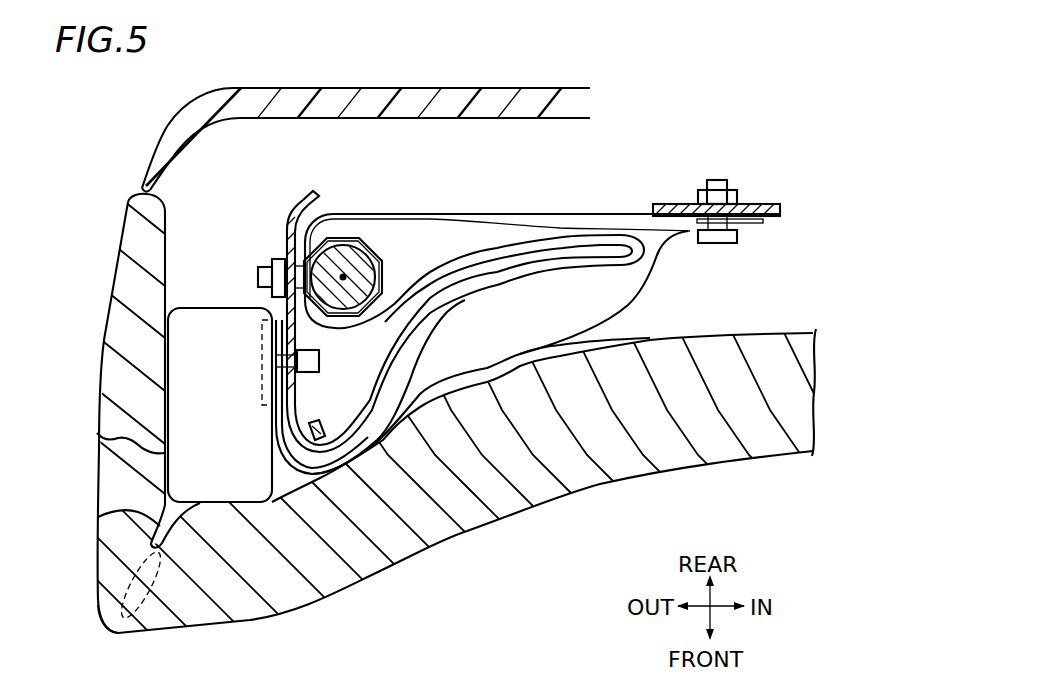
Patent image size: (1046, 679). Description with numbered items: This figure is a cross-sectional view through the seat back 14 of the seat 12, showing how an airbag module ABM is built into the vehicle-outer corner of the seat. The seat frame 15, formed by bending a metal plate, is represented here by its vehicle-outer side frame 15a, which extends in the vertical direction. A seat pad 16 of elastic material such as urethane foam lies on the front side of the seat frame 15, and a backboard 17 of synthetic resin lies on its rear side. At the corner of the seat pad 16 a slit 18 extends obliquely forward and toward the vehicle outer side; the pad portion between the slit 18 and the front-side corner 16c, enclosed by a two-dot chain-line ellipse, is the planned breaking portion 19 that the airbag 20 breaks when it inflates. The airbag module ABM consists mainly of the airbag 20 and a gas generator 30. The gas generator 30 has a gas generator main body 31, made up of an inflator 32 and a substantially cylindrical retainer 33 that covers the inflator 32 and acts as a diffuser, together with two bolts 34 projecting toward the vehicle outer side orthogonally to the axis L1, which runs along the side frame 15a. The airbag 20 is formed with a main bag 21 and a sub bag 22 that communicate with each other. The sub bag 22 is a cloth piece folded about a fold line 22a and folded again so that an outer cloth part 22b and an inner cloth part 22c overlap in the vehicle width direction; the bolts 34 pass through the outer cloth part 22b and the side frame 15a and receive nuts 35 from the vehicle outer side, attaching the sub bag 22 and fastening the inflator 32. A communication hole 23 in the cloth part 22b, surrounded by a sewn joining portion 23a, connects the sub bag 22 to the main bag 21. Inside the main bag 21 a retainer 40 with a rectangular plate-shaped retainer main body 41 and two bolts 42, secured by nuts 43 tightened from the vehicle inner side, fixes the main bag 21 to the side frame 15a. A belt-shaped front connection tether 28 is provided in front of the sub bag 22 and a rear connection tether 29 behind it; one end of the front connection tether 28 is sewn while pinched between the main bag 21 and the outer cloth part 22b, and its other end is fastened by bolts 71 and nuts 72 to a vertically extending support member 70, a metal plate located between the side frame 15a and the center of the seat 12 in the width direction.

The seat 12 is at (542, 432).
The seat back 14 is at (726, 472).
The seat frame 15 is at (338, 170).
The side frame 15a is at (335, 160).
The seat pad 16 is at (815, 376).
The corner 16c is at (103, 629).
The backboard 17 is at (592, 100).
The slit 18 is at (100, 517).
The planned breaking portion 19 is at (128, 588).
The airbag 20 is at (103, 339).
The main bag 21 is at (97, 434).
The sub bag 22 is at (454, 316).
The fold line 22a is at (290, 207).
The cloth part 22b is at (522, 284).
The cloth part 22c is at (440, 300).
The communication hole 23 is at (282, 400).
The joining portion 23a is at (280, 418).
The front connection tether 28 is at (625, 306).
The rear connection tether 29 is at (595, 213).
The gas generator 30 is at (441, 233).
The gas generator main body 31 is at (441, 233).
The inflator 32 is at (392, 239).
The retainer 33 is at (341, 248).
The bolt 34 is at (258, 278).
The nut 35 is at (274, 262).
The retainer 40 is at (279, 378).
The retainer main body 41 is at (262, 360).
The bolt 42 is at (308, 394).
The nut 43 is at (316, 398).
The support member 70 is at (782, 210).
The bolt 71 is at (720, 244).
The nut 72 is at (736, 201).
The axis L1 is at (343, 277).
The airbag module ABM is at (307, 481).